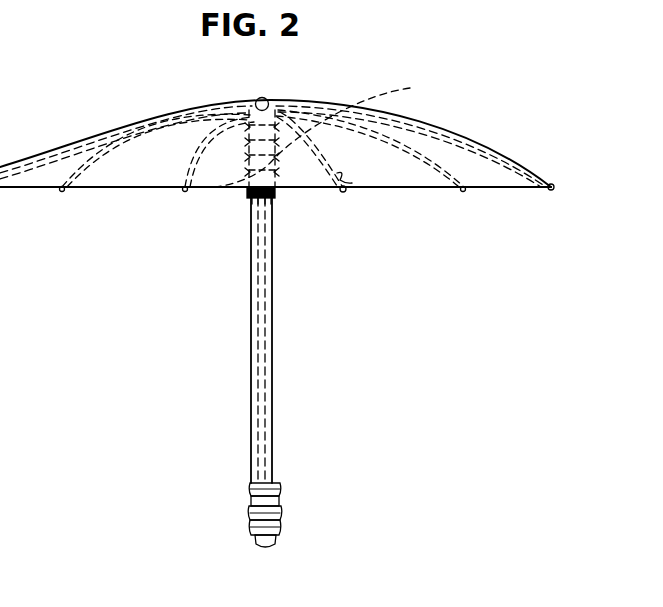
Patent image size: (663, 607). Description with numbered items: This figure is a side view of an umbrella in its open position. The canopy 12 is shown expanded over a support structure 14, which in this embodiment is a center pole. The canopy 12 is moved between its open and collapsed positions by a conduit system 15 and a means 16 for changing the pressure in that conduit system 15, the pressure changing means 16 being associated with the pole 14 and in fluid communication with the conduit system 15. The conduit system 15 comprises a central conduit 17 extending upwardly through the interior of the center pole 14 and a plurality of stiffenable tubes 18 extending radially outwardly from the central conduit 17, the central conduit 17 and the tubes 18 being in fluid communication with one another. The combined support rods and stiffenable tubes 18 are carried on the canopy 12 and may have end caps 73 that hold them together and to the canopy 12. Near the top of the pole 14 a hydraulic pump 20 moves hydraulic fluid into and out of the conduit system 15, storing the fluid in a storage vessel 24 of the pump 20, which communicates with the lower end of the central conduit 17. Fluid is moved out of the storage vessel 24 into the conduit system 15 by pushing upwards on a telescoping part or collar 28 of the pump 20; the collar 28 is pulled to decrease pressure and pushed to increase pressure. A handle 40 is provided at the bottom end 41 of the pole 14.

The canopy 12 is at (63, 148).
The support structure 14 is at (273, 390).
The conduit system 15 is at (253, 312).
The means for changing the pressure 16 is at (398, 88).
The central conduit 17 is at (272, 283).
The stiffenable tubes 18 is at (465, 140).
The hydraulic pump 20 is at (213, 108).
The storage vessel 24 is at (212, 190).
The telescoping part or collar 28 is at (300, 130).
The handle 40 is at (275, 512).
The bottom end 41 is at (272, 547).
The end caps 73 is at (61, 190).